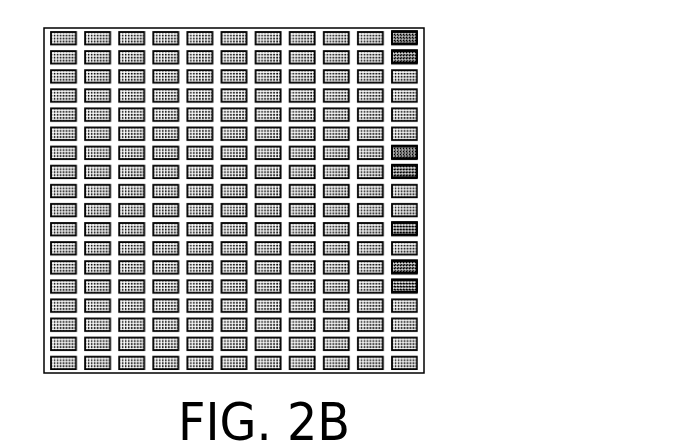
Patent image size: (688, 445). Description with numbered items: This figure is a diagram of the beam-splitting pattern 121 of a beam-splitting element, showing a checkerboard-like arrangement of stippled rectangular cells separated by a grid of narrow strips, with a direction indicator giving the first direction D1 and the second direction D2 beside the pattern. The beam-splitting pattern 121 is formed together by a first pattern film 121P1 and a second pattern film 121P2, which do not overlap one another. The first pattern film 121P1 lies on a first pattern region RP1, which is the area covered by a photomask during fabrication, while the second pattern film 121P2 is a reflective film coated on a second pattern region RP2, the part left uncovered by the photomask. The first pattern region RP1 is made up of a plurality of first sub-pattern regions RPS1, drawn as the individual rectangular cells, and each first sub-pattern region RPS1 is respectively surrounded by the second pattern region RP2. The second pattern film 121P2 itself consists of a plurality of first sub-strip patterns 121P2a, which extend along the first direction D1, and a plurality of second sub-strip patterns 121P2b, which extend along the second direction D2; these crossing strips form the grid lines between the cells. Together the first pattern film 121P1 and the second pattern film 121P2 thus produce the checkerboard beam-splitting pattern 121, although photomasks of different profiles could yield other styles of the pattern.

The beam-splitting pattern 121 is at (551, 370).
The first pattern film 121P1 is at (405, 232).
The second pattern film 121P2 is at (491, 282).
The first sub-strip patterns 121P2a is at (409, 288).
The second sub-strip patterns 121P2b is at (408, 269).
The first pattern region RP1 is at (468, 156).
The first sub-pattern regions RPS1 is at (408, 153).
The second pattern region RP2 is at (354, 34).
The first direction D1 is at (507, 113).
The second direction D2 is at (507, 113).